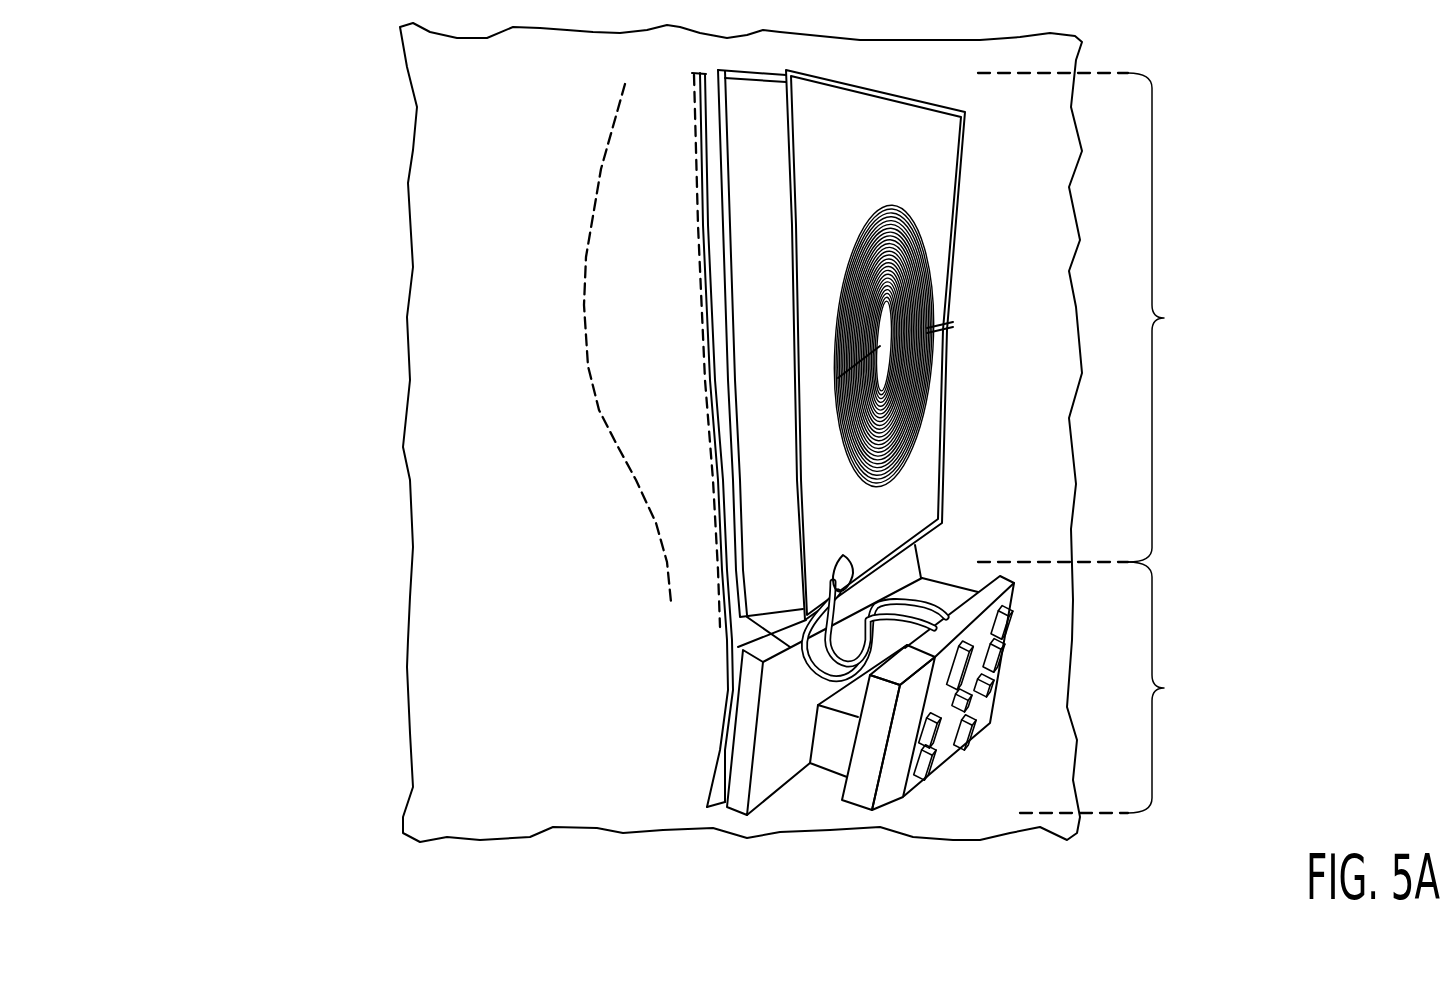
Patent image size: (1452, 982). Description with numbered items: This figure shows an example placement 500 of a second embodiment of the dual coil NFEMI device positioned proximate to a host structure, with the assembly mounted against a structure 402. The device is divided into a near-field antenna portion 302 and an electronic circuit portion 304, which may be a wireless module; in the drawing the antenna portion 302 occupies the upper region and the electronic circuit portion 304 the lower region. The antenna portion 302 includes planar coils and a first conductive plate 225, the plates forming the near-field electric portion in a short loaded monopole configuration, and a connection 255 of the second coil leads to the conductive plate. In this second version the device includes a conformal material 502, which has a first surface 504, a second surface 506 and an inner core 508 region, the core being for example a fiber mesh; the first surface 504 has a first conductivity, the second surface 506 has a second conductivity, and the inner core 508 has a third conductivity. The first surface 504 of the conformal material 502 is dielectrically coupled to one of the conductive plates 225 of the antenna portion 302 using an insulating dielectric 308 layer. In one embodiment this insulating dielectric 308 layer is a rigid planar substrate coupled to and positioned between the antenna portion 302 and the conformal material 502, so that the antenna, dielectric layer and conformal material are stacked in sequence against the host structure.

The example placement 500 is at (173, 140).
The housing wall / board 402 is at (432, 758).
The second surface 506 is at (600, 170).
The inner core 508 is at (619, 318).
The conformal material 502 is at (667, 273).
The first surface 504 is at (710, 490).
The first conductive plate 225 is at (845, 137).
The connection 255 is at (953, 326).
The insulating dielectric layer 308 is at (713, 755).
The near-field antenna portion 302 is at (1096, 317).
The electronic circuit portion 304 is at (1117, 687).